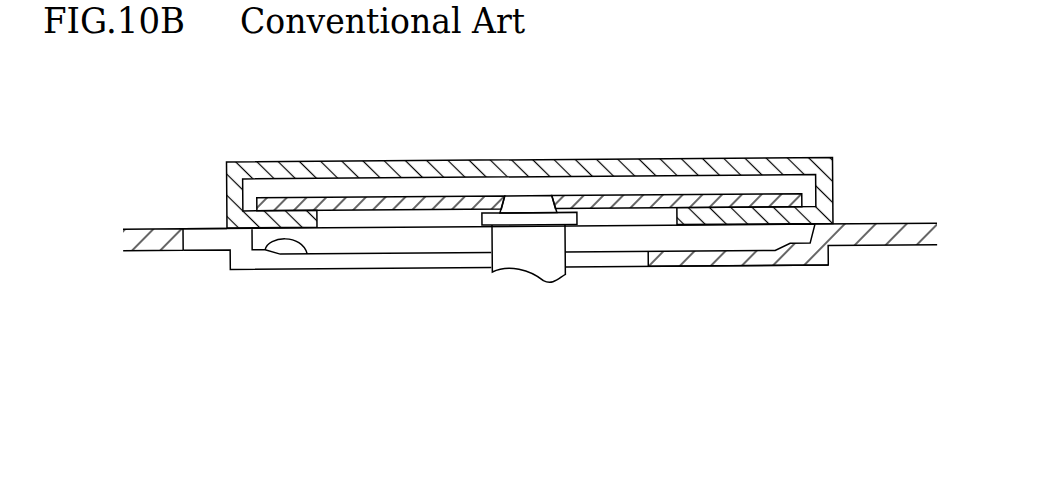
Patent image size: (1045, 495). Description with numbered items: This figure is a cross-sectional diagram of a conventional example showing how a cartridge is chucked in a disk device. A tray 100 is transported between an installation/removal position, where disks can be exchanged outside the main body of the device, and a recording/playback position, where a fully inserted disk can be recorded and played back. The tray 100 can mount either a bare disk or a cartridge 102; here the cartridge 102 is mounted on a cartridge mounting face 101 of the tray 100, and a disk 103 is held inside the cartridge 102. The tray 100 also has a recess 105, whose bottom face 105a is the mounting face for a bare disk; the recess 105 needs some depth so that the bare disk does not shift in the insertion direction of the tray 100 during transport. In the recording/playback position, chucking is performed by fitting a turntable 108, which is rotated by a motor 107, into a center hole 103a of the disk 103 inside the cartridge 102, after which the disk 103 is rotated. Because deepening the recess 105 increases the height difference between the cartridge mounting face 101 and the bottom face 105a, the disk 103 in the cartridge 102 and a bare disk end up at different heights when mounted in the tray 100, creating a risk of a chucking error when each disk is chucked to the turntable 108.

The tray 100 is at (153, 242).
The cartridge mounting face 101 is at (202, 228).
The cartridge 102 is at (455, 162).
The disk 103 is at (424, 207).
The center hole 103a is at (500, 197).
The recess 105 is at (247, 232).
The bottom face 105a is at (287, 240).
The motor 107 is at (538, 270).
The turntable 108 is at (570, 227).